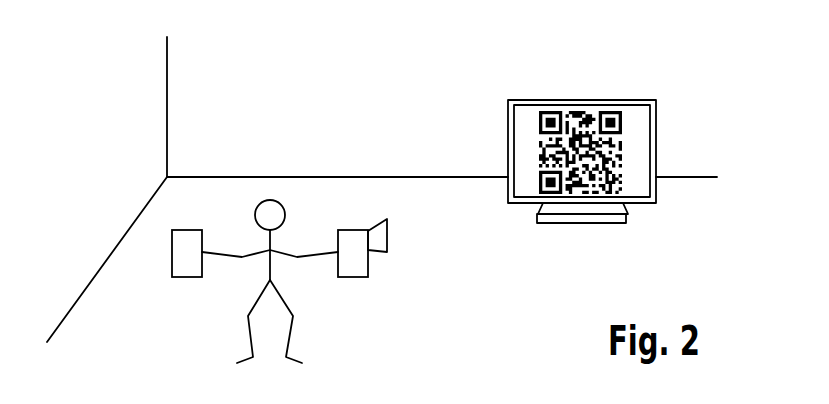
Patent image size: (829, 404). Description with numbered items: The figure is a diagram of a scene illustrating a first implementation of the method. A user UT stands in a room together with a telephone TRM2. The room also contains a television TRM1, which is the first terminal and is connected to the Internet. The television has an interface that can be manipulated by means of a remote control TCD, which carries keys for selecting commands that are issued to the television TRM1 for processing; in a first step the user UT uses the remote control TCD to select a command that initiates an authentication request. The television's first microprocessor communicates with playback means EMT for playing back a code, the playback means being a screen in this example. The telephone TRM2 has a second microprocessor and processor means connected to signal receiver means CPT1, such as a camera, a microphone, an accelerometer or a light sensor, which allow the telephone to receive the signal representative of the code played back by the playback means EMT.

The user UT is at (256, 214).
The remote control TCD is at (190, 268).
The telephone TRM2 is at (358, 268).
The signal receiver means CPT1 is at (384, 238).
The television TRM1 is at (647, 135).
The playback means EMT is at (523, 127).